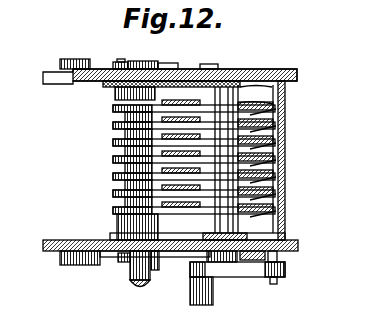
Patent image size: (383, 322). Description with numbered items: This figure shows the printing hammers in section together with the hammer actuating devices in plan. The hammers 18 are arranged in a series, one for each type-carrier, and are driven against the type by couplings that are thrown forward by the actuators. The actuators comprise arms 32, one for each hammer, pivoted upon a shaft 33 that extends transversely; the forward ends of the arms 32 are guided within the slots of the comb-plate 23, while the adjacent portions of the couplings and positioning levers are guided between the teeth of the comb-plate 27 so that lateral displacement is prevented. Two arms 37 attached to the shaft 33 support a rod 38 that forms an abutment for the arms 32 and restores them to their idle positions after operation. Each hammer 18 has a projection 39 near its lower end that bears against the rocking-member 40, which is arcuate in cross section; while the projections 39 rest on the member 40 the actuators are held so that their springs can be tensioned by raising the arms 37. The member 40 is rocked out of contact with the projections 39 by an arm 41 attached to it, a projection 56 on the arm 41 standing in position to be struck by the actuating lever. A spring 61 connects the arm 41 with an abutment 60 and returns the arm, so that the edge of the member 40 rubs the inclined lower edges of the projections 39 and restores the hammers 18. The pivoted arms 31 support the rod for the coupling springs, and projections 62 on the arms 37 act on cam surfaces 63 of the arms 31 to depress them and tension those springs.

The hammers 18 is at (125, 207).
The comb-plate 23 is at (285, 196).
The comb-plate 27 is at (211, 64).
The pivoted arms 31 is at (93, 68).
The arms (actuators) 32 is at (113, 178).
The shaft 33 is at (133, 278).
The arms 37 is at (258, 79).
The rod 38 is at (281, 81).
The projection 39 is at (232, 79).
The rocking-member 40 is at (255, 94).
The arm 41 is at (243, 268).
The projection 56 is at (208, 292).
The abutment 60 is at (275, 280).
The spring 61 is at (275, 256).
The projections 62 is at (122, 62).
The cam surfaces 63 is at (166, 65).